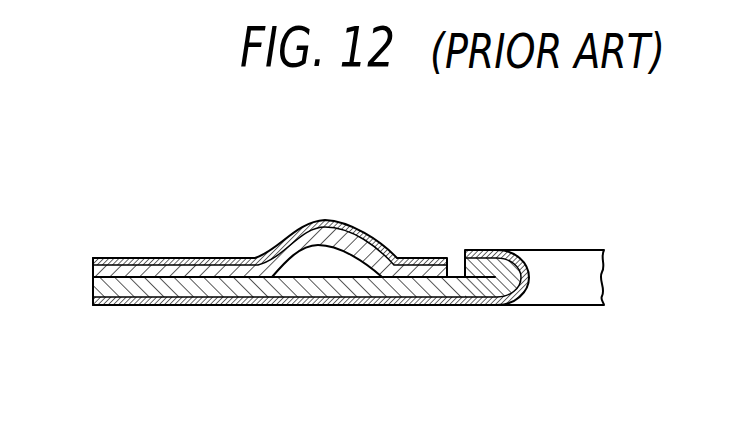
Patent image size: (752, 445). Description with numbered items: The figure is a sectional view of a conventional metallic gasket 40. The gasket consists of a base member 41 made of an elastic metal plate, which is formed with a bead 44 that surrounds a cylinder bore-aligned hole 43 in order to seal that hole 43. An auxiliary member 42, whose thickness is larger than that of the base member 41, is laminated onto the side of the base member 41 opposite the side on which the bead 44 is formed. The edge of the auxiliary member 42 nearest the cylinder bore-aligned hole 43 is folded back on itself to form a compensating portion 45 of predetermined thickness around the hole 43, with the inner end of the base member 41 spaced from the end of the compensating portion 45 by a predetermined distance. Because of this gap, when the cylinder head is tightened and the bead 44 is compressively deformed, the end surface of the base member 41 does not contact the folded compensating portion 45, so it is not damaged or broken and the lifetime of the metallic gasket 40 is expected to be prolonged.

The metallic gasket 40 is at (412, 249).
The base member 41 is at (172, 272).
The auxiliary member 42 is at (340, 292).
The cylinder bore-aligned hole 43 is at (530, 278).
The bead 44 is at (337, 222).
The compensating portion 45 is at (492, 272).